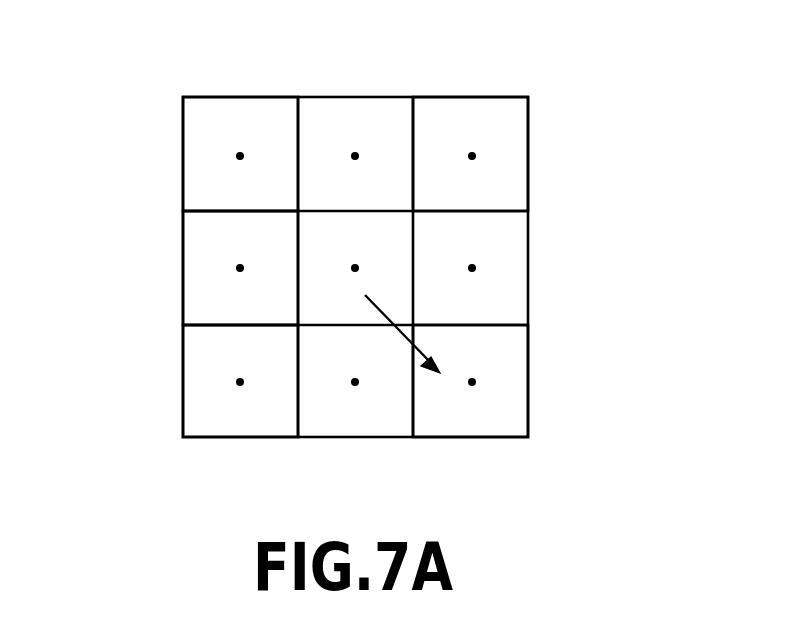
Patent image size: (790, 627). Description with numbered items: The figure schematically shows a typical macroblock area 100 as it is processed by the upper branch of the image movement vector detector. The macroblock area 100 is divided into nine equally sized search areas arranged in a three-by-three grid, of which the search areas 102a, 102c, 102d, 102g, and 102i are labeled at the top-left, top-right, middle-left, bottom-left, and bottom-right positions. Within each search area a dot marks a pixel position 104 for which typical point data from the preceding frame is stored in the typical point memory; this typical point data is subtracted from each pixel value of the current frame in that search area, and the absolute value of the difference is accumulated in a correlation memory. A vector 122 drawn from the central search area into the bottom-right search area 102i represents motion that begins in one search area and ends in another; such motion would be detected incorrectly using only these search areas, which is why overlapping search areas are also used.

The macroblock area 100 is at (532, 155).
The search area 102a is at (199, 110).
The search area 102c is at (438, 105).
The search area 102d is at (190, 280).
The search area 102g is at (198, 412).
The search area 102i is at (498, 375).
The pixel position 104 is at (240, 152).
The vector 122 is at (403, 338).